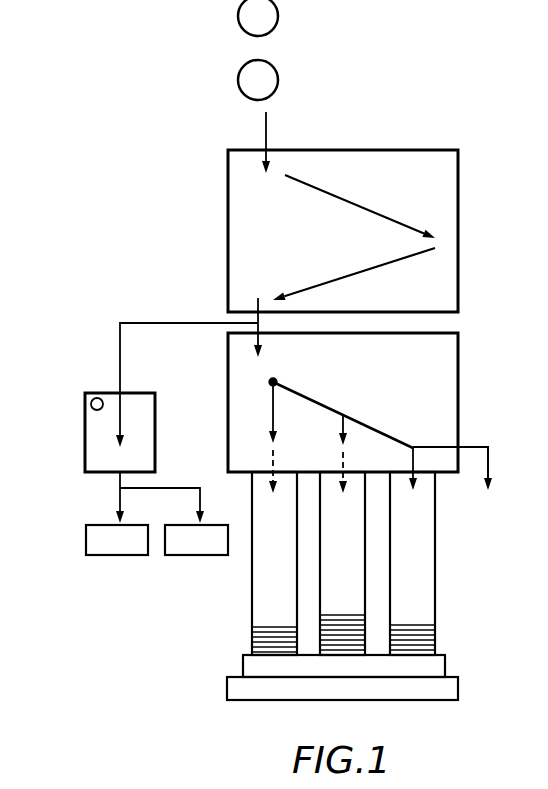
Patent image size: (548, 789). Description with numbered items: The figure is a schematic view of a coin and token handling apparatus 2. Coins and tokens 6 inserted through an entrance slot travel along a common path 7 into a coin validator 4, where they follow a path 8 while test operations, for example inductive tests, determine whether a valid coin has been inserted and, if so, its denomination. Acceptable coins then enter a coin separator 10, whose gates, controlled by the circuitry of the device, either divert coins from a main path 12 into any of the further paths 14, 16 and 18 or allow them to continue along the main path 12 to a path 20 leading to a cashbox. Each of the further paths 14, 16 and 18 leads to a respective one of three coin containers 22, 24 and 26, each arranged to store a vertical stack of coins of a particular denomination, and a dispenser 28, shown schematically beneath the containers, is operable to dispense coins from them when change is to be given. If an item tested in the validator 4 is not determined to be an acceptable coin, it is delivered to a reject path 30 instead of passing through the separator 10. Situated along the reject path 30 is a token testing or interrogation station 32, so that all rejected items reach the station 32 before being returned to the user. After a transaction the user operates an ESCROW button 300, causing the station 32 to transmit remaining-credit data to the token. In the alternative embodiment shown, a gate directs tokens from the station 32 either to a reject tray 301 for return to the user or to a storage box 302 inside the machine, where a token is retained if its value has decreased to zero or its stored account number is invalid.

The coin and token handling apparatus 2 is at (372, 127).
The coin validator 4 is at (458, 252).
The coins and tokens 6 is at (270, 30).
The common path 7 is at (267, 130).
The path in the validator 8 is at (368, 207).
The coin separator 10 is at (458, 385).
The main path 12 is at (312, 400).
The further path 14 is at (270, 416).
The further path 16 is at (340, 426).
The further path 18 is at (410, 456).
The path leading to cashbox 20 is at (490, 456).
The coin container 22 is at (251, 576).
The coin container 24 is at (319, 528).
The coin container 26 is at (436, 540).
The dispenser 28 is at (459, 686).
The reject path 30 is at (118, 342).
The token testing or interrogation station 32 is at (85, 434).
The ESCROW button 300 is at (88, 396).
The reject tray 301 is at (73, 565).
The storage box 302 is at (178, 556).